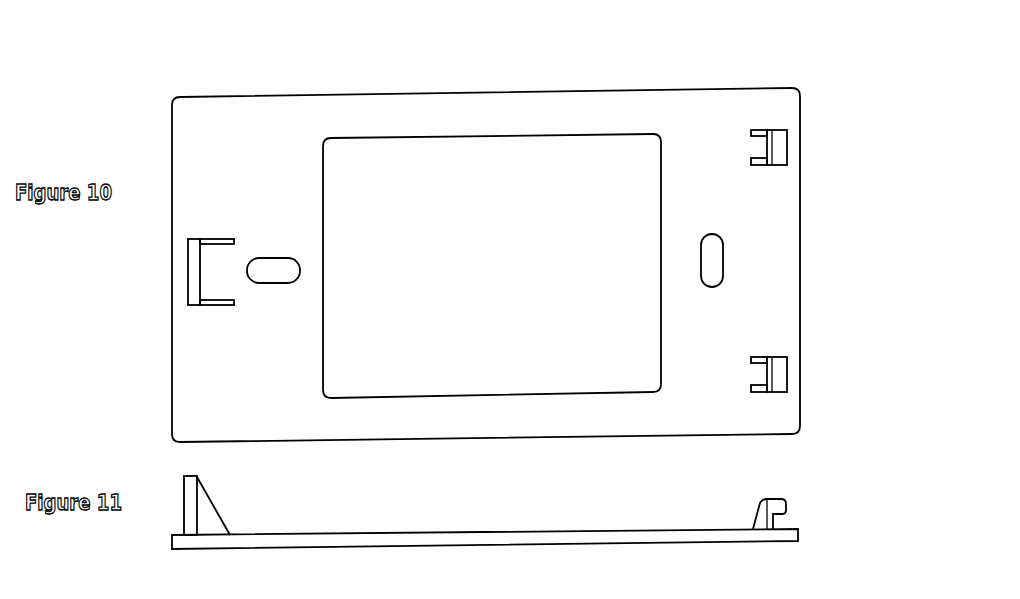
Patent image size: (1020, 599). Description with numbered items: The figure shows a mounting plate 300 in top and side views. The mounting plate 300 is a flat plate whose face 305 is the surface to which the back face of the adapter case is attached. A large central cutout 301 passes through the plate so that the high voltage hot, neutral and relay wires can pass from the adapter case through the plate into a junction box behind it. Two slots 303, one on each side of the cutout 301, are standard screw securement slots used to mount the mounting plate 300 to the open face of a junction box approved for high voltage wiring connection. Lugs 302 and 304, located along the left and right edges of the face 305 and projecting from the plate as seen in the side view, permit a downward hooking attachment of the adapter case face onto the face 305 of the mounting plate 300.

In FIG. 10, the mounting plate 300 is at (828, 429).
In FIG. 11, the mounting plate 300 is at (818, 526).
In FIG. 10, the cutout 301 is at (457, 156).
In FIG. 10, the lug 302 is at (207, 316).
In FIG. 11, the lug 302 is at (205, 467).
In FIG. 10, the slots 303 is at (706, 265).
In FIG. 10, the lug 304 is at (766, 174).
In FIG. 11, the lug 304 is at (756, 497).
In FIG. 10, the face 305 is at (415, 427).
In FIG. 11, the face 305 is at (440, 528).